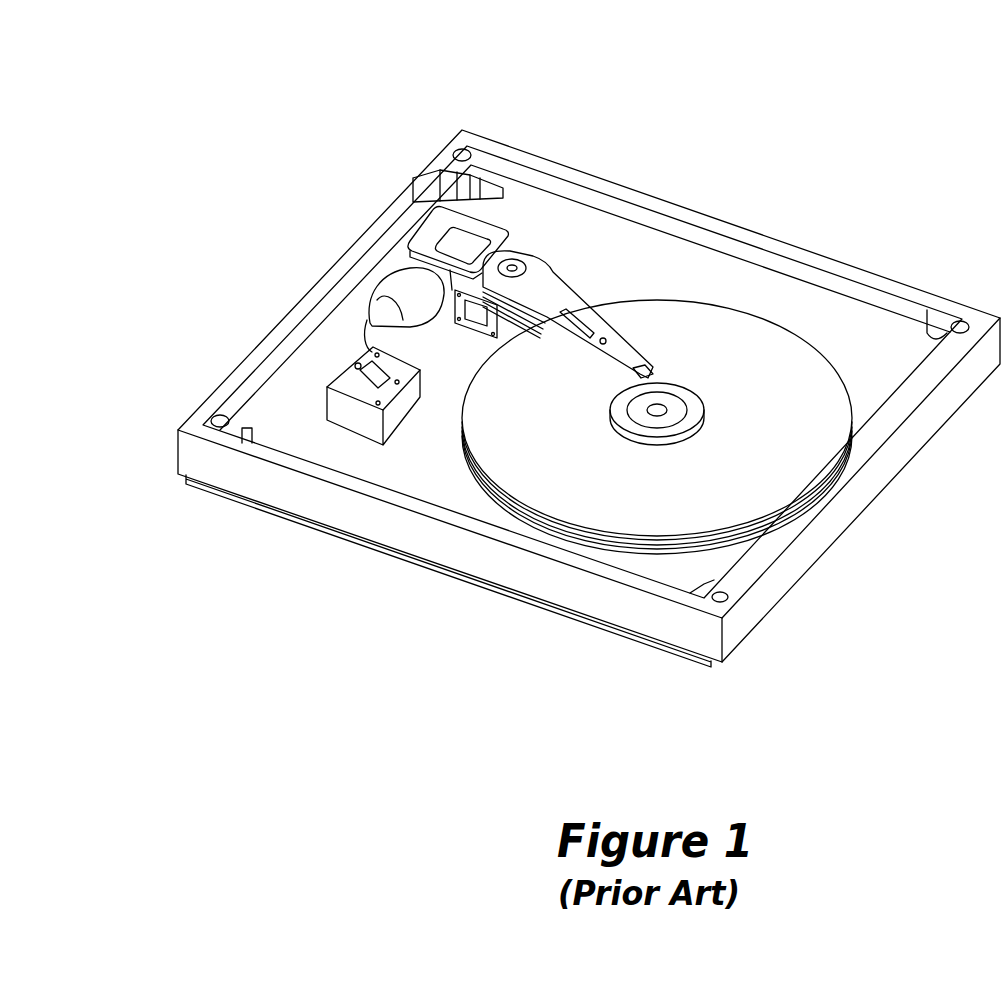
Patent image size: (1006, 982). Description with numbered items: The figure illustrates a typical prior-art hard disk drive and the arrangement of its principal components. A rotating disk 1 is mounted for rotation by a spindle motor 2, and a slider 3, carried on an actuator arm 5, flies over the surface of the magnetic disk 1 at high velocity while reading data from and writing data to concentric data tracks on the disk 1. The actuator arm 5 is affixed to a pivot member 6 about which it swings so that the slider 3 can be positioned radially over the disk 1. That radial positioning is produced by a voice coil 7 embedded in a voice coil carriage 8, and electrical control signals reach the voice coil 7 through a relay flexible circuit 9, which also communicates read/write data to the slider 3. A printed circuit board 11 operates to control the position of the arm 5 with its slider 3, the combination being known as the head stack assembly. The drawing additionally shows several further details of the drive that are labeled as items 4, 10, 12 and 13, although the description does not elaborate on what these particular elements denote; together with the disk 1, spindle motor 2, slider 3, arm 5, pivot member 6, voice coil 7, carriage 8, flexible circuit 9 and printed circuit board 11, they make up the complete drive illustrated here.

The rotating disk 1 is at (753, 433).
The spindle motor 2 is at (697, 410).
The slider 3 is at (653, 363).
The suspension 4 is at (618, 346).
The actuator arm 5 is at (547, 287).
The pivot member 6 is at (515, 258).
The voice coil 7 is at (450, 223).
The voice coil carriage 8 is at (417, 247).
The relay flexible circuit 9 is at (382, 299).
The flex circuit 10 is at (400, 312).
The printed circuit board 11 is at (372, 378).
The connector housing 12 is at (390, 393).
The base plate 13 is at (608, 593).